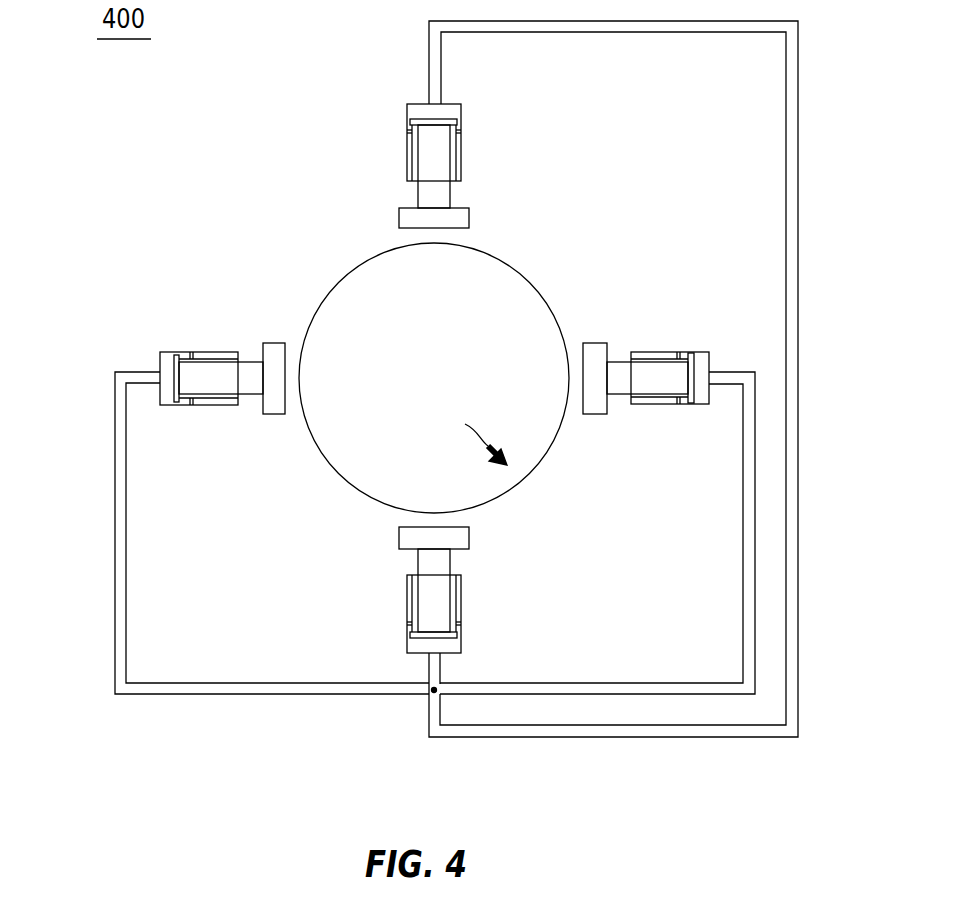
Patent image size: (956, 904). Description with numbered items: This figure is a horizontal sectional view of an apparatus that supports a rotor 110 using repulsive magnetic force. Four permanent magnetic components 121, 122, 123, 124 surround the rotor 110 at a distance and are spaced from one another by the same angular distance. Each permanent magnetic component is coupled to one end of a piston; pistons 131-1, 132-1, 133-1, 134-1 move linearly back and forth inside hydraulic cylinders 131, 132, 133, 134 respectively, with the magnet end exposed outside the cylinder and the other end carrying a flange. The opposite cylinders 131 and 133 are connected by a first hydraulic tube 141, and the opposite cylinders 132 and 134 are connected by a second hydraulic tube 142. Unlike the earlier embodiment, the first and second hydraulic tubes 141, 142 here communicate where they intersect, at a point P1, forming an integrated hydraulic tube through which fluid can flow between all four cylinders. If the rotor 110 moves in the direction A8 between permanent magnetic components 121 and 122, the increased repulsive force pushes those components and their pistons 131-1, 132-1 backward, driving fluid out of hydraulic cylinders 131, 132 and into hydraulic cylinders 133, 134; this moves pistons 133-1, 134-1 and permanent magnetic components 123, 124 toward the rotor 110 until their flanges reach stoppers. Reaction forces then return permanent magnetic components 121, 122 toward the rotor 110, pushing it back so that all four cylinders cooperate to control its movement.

The rotor 110 is at (531, 283).
The direction A8 is at (467, 433).
The permanent magnetic component 121 is at (399, 539).
The permanent magnetic component 122 is at (598, 414).
The permanent magnetic component 123 is at (469, 219).
The permanent magnetic component 124 is at (275, 343).
The hydraulic cylinder 131 is at (438, 611).
The piston 131-1 is at (442, 638).
The hydraulic cylinder 132 is at (690, 394).
The piston 132-1 is at (694, 372).
The hydraulic cylinder 133 is at (435, 130).
The piston 133-1 is at (427, 119).
The hydraulic cylinder 134 is at (149, 362).
The piston 134-1 is at (172, 385).
The first hydraulic tube 141 is at (587, 738).
The second hydraulic tube 142 is at (115, 657).
The point P1 is at (432, 693).